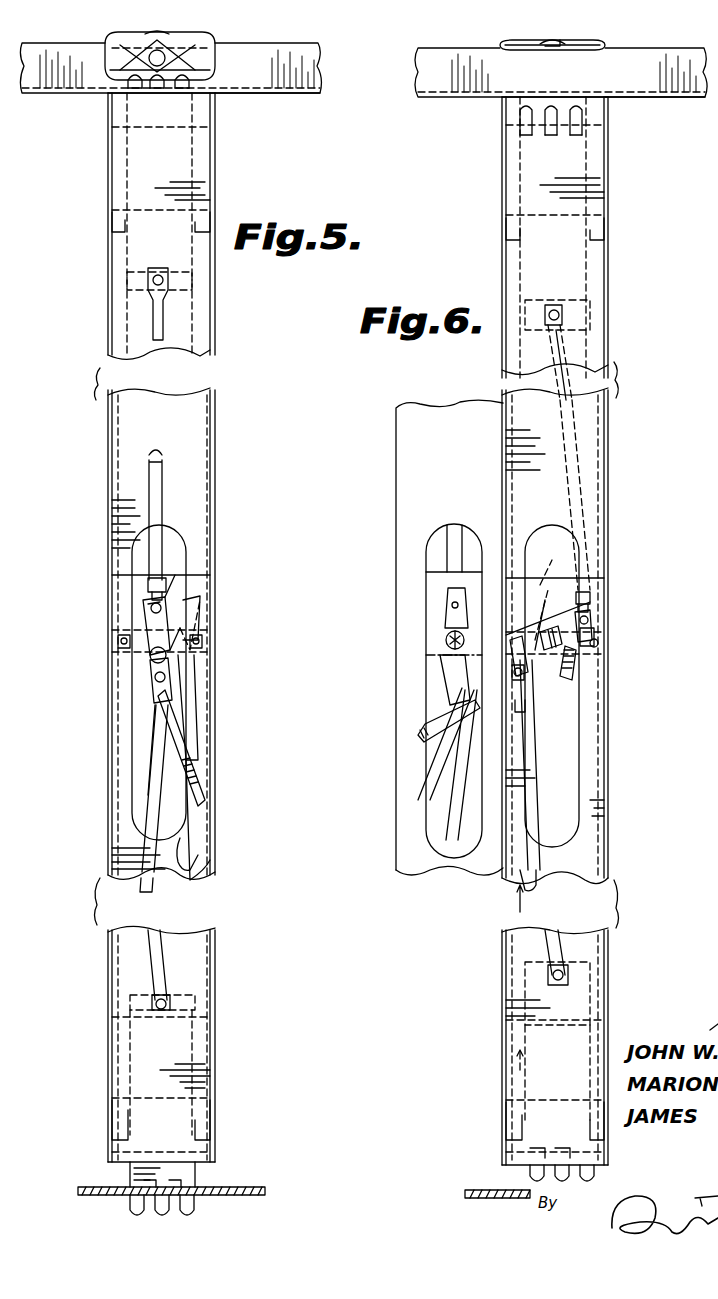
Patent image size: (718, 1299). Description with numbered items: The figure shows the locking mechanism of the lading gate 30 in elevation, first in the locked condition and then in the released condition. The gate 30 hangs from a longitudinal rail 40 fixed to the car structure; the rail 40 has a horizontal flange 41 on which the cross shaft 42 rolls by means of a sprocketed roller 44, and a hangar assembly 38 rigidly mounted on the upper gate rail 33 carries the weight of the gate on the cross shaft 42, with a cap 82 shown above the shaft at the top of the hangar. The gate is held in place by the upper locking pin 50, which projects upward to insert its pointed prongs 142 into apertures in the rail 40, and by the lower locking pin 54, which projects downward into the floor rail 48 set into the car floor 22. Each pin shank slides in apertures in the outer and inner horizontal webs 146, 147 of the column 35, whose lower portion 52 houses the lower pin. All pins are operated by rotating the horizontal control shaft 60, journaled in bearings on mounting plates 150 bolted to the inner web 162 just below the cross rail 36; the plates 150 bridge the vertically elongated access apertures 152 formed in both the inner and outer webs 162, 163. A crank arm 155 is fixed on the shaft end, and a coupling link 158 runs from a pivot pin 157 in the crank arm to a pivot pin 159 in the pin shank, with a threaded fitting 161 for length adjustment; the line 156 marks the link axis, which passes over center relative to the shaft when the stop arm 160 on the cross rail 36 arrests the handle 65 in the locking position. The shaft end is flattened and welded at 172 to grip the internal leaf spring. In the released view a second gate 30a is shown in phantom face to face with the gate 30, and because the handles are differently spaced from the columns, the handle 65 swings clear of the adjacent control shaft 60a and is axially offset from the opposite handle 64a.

In FIG. 5, the car floor 22 is at (234, 1186).
In FIG. 6, the car floor 22 is at (486, 1190).
In FIG. 6, the gate 30 is at (614, 546).
In FIG. 6, the second gate 30a is at (392, 582).
In FIG. 5, the upper gate rail 33 is at (185, 208).
In FIG. 6, the upper gate rail 33 is at (582, 212).
In FIG. 5, the right column 35 is at (214, 676).
In FIG. 6, the right column 35 is at (608, 668).
In FIG. 5, the cross rail 36 is at (129, 584).
In FIG. 6, the cross rail 36 is at (570, 576).
In FIG. 5, the left hangar assembly 38 is at (218, 108).
In FIG. 6, the left hangar assembly 38 is at (612, 118).
In FIG. 5, the rail 40 is at (312, 47).
In FIG. 6, the rail 40 is at (692, 47).
In FIG. 5, the horizontal flange 41 is at (270, 96).
In FIG. 6, the horizontal flange 41 is at (650, 98).
In FIG. 5, the cross shaft 42 is at (168, 55).
In FIG. 5, the sprocketed roller 44 is at (160, 40).
In FIG. 6, the sprocketed roller 44 is at (556, 42).
In FIG. 5, the floor rail 48 is at (226, 1196).
In FIG. 6, the floor rail 48 is at (494, 1198).
In FIG. 5, the left upper locking pin 50 is at (130, 112).
In FIG. 6, the left upper locking pin 50 is at (516, 152).
In FIG. 5, the lower housing portion 52 is at (200, 1082).
In FIG. 6, the lower housing portion 52 is at (555, 1047).
In FIG. 5, the left lower locking pin 54 is at (128, 1174).
In FIG. 6, the left lower locking pin 54 is at (522, 1138).
In FIG. 5, the control shaft 60 is at (150, 655).
In FIG. 6, the control shaft 60 is at (556, 640).
In FIG. 6, the control shaft of adjacent gate 60a is at (446, 636).
In FIG. 6, the handle of adjacent gate 64a is at (420, 780).
In FIG. 5, the handle 65 is at (190, 752).
In FIG. 6, the handle 65 is at (432, 718).
In FIG. 5, the cap 82 is at (210, 48).
In FIG. 6, the cap 82 is at (590, 42).
In FIG. 5, the pointed prong 142 is at (192, 72).
In FIG. 6, the pointed prong 142 is at (582, 1172).
In FIG. 5, the outer horizontal web 146 is at (180, 1148).
In FIG. 5, the inner horizontal web 147 is at (188, 1018).
In FIG. 5, the mounting plate 150 is at (142, 634).
In FIG. 6, the mounting plate 150 is at (600, 638).
In FIG. 5, the access aperture 152 is at (200, 706).
In FIG. 6, the access aperture 152 is at (590, 718).
In FIG. 5, the crank arm 155 is at (165, 618).
In FIG. 6, the crank arm 155 is at (510, 660).
In FIG. 5, the link axis line 156 is at (176, 640).
In FIG. 6, the link axis line 156 is at (522, 645).
In FIG. 5, the pivot pin 157 is at (162, 608).
In FIG. 6, the pivot pin 157 is at (592, 620).
In FIG. 5, the coupling link 158 is at (165, 560).
In FIG. 6, the coupling link 158 is at (586, 518).
In FIG. 5, the pivot pin 159 is at (150, 280).
In FIG. 6, the pivot pin 159 is at (568, 980).
In FIG. 5, the stop arm 160 is at (186, 620).
In FIG. 6, the stop arm 160 is at (578, 660).
In FIG. 5, the length adjusting fitting 161 is at (166, 582).
In FIG. 6, the length adjusting fitting 161 is at (592, 598).
In FIG. 5, the inner web 162 is at (198, 846).
In FIG. 5, the outer web 163 is at (195, 518).
In FIG. 6, the outer web 163 is at (560, 470).
In FIG. 5, the flattened welded shaft end 172 is at (158, 670).
In FIG. 6, the flattened welded shaft end 172 is at (530, 668).